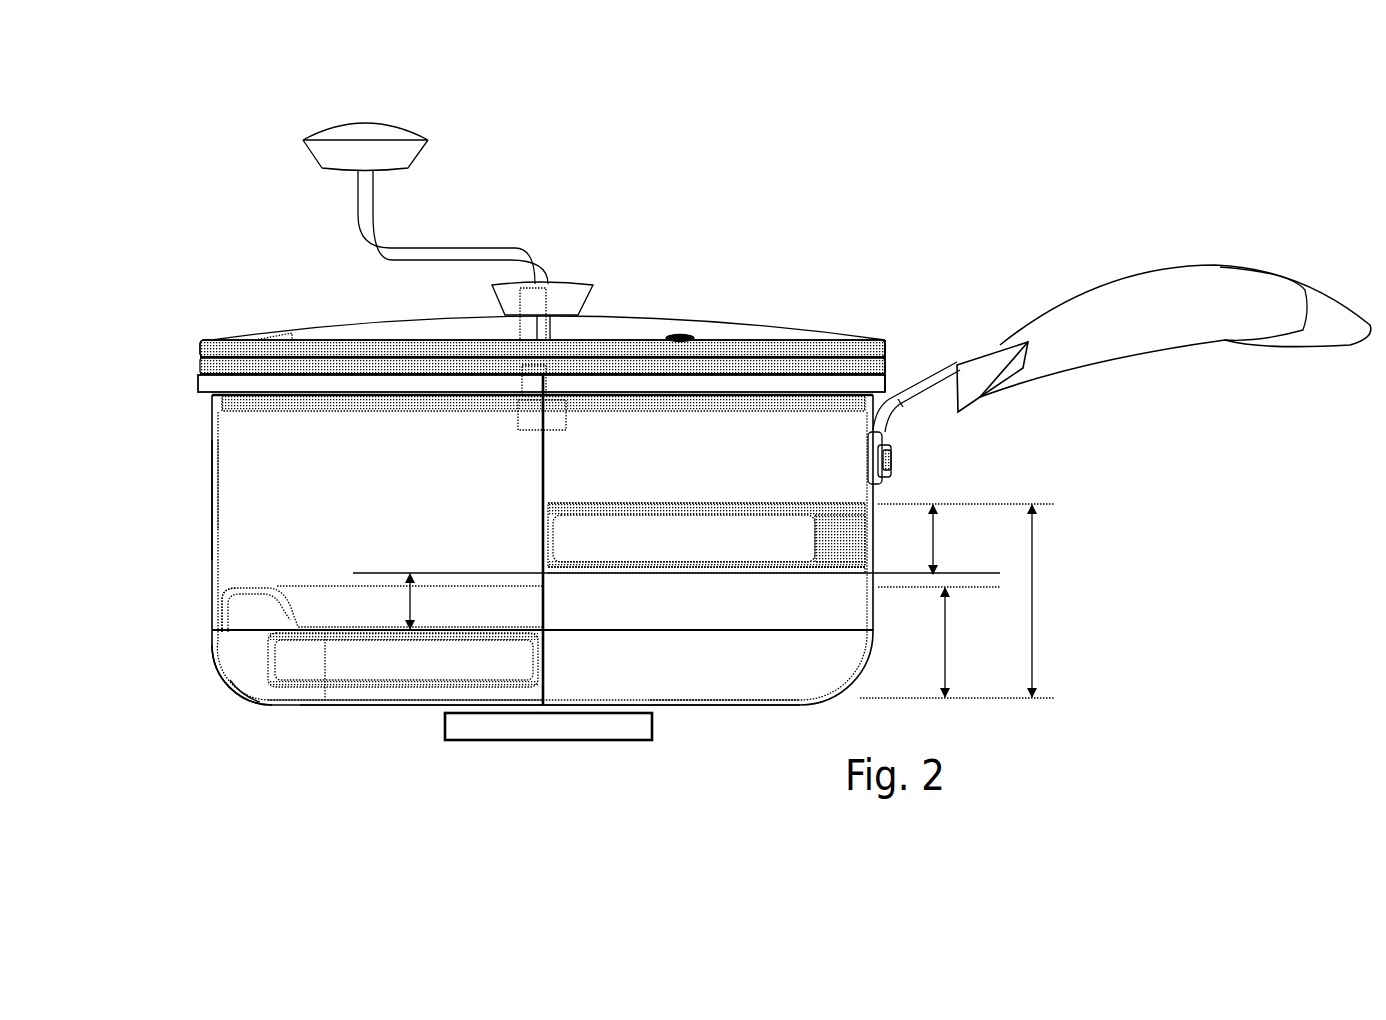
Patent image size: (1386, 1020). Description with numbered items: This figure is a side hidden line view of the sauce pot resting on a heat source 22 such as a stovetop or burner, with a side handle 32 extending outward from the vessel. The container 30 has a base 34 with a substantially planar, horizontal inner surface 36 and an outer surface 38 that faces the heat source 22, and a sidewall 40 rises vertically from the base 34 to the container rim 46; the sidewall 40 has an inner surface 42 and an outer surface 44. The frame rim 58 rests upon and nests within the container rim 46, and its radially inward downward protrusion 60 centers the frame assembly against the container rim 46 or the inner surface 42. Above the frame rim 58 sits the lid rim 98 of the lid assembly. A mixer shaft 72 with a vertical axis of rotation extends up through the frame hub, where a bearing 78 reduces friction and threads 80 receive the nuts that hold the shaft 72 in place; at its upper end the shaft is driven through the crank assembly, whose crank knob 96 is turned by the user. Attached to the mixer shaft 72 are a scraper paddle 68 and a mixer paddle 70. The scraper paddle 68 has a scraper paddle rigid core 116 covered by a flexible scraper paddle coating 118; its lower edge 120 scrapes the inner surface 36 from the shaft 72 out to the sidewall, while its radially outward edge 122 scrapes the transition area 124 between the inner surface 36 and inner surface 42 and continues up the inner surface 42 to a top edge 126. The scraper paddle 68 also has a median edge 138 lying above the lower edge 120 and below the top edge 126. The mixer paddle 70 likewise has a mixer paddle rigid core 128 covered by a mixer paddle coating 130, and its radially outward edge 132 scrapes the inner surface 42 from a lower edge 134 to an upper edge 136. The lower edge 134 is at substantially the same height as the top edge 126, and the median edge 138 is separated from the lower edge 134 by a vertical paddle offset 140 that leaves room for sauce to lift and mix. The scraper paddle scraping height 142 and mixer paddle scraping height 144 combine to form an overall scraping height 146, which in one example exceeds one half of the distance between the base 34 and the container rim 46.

The heat source 22 is at (573, 740).
The container 30 is at (872, 652).
The handle 32 is at (1255, 272).
The base 34 is at (397, 705).
The inner surface 36 is at (688, 700).
The outer surface 38 is at (745, 705).
The sidewall 40 is at (212, 472).
The inner surface 42 is at (220, 510).
The outer surface 44 is at (212, 523).
The container rim 46 is at (200, 383).
The frame rim 58 is at (200, 357).
The downward protrusion 60 is at (222, 401).
The scraper paddle 68 is at (247, 692).
The mixer paddle 70 is at (787, 503).
The mixer shaft 72 is at (548, 452).
The bearing 78 is at (565, 415).
The threads 80 is at (505, 311).
The crank knob 96 is at (406, 118).
The lid rim 98 is at (886, 344).
The scraper paddle rigid core 116 is at (297, 688).
The scraper paddle coating 118 is at (427, 690).
The lower edge 120 is at (355, 690).
The radially outward edge 122 is at (226, 612).
The transition area 124 is at (218, 663).
The top edge 126 is at (240, 588).
The mixer paddle rigid core 128 is at (770, 567).
The mixer paddle coating 130 is at (828, 567).
The radially outward edge 132 is at (862, 520).
The lower edge 134 is at (700, 573).
The upper edge 136 is at (710, 503).
The median edge 138 is at (448, 599).
The vertical paddle offset 140 is at (674, 601).
The scraper paddle scraping height 142 is at (945, 655).
The mixer paddle scraping height 144 is at (933, 547).
The overall scraping height 146 is at (1032, 598).